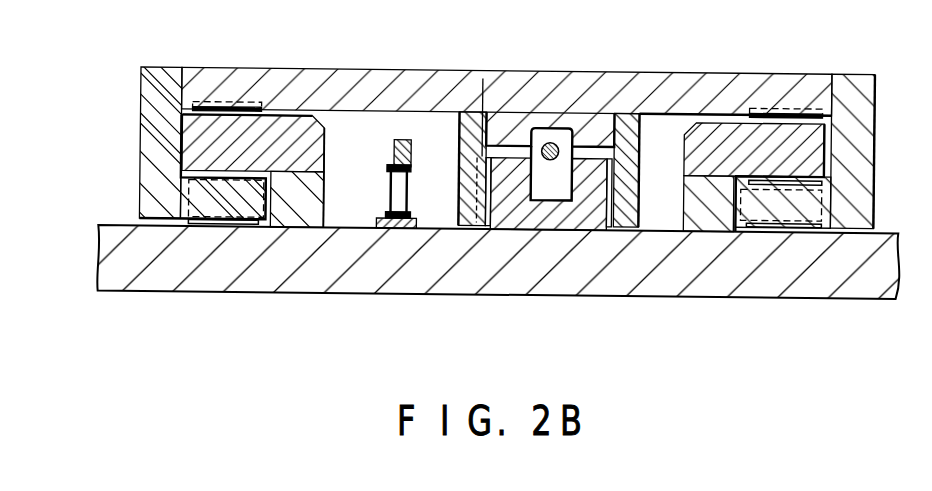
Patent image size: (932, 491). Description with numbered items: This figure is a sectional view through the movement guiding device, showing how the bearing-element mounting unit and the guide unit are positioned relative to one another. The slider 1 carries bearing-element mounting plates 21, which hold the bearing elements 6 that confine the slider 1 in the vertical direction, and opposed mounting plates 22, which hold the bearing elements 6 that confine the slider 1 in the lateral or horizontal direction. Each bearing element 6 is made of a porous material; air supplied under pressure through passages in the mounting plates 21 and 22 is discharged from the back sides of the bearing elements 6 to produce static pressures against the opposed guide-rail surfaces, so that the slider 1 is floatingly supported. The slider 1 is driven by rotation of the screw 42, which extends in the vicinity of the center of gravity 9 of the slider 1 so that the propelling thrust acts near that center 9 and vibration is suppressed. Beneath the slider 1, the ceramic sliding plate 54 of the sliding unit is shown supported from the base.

The slider 1 is at (320, 76).
The bearing element 6 is at (229, 99).
The center of gravity 9 is at (473, 107).
The bearing-element mounting plate 21 is at (148, 132).
The bearing-element mounting plate 22 is at (627, 126).
The screw 42 is at (552, 138).
The sliding plate 54 is at (395, 148).